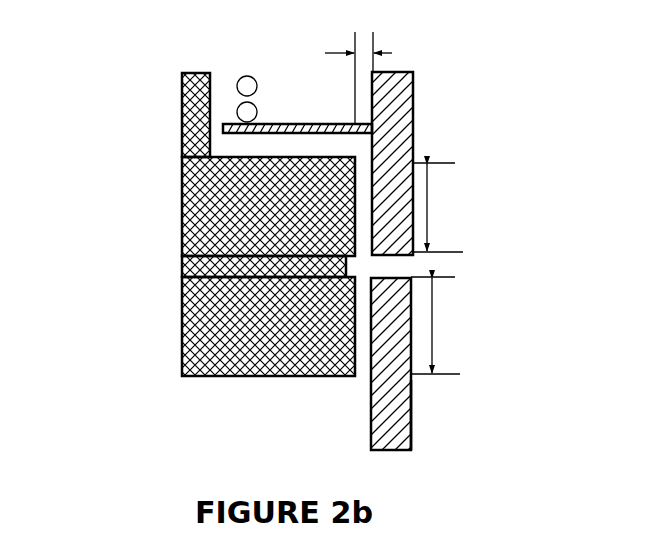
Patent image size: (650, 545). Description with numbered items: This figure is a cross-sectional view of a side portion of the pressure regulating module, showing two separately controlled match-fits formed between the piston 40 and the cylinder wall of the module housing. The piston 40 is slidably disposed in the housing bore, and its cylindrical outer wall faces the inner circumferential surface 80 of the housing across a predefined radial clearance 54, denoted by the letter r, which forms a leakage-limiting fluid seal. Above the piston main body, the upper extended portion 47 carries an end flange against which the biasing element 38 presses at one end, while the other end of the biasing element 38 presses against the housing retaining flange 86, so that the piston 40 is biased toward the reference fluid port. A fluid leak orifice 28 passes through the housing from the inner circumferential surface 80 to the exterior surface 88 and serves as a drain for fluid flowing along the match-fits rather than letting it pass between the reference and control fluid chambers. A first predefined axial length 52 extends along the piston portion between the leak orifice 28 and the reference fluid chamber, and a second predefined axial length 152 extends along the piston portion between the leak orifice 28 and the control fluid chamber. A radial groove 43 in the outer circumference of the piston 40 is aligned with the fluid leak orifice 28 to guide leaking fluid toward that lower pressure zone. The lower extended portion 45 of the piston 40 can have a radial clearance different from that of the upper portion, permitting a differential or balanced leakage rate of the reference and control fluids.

The biasing element 38 is at (247, 75).
The upper extended portion 47 is at (181, 125).
The housing retaining flange 86 is at (307, 124).
The predefined radial clearance 54 is at (392, 53).
The piston 40 is at (174, 207).
The radial groove 43 is at (181, 270).
The lower extended portion 45 is at (181, 346).
The predefined axial length 52 is at (428, 216).
The fluid leak orifice 28 is at (394, 267).
The inner circumferential surface 80 is at (370, 424).
The exterior surface 88 is at (411, 415).
The predefined axial length 152 is at (432, 336).